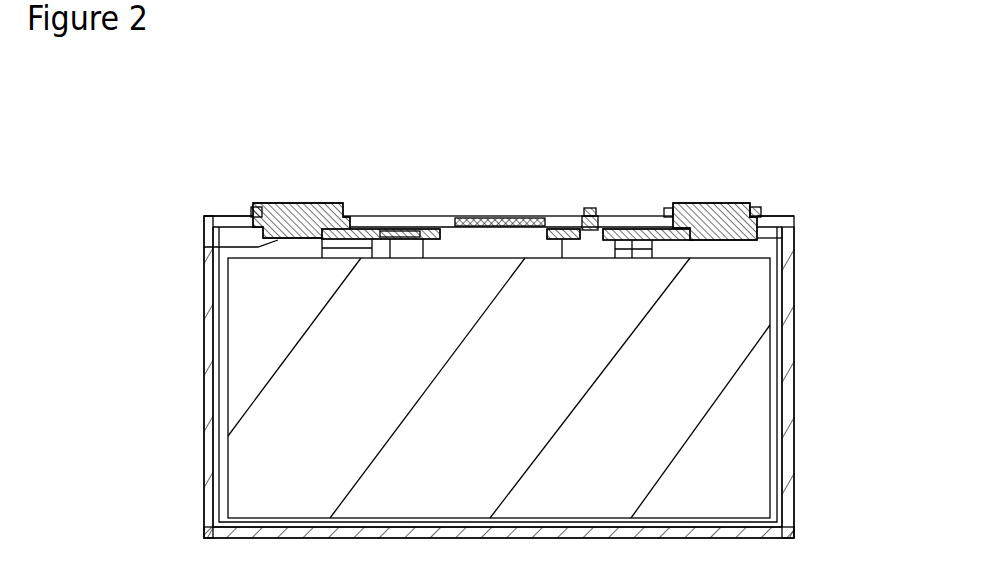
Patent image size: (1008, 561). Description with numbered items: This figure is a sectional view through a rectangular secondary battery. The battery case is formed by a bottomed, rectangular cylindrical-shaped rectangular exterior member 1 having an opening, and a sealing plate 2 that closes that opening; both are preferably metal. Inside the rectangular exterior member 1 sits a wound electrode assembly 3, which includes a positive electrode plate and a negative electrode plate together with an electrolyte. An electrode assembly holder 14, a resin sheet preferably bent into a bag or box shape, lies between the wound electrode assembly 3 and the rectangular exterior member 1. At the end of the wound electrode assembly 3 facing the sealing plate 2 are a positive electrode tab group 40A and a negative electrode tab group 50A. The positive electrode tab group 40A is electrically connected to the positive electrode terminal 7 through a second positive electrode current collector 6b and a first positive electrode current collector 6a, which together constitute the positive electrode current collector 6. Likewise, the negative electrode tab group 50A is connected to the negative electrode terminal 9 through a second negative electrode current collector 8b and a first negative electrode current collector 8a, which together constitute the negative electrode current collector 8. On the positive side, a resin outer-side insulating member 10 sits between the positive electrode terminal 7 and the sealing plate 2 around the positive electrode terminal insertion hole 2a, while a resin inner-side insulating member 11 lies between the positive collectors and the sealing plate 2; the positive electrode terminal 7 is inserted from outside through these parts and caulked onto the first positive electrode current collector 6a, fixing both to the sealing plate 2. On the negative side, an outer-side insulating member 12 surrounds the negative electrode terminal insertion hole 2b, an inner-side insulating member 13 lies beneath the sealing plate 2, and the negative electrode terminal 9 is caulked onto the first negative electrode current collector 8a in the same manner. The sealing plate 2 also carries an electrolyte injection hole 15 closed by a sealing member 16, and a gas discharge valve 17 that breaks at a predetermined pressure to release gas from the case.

The rectangular exterior member 1 is at (790, 395).
The sealing plate 2 is at (438, 220).
The positive electrode terminal insertion hole 2a is at (752, 222).
The negative electrode terminal insertion hole 2b is at (250, 214).
The wound electrode assembly 3 is at (243, 475).
The positive electrode current collector 6 is at (632, 262).
The first positive electrode current collector 6a is at (760, 238).
The second positive electrode current collector 6b is at (634, 258).
The positive electrode terminal 7 is at (705, 202).
The negative electrode current collector 8 is at (327, 250).
The first negative electrode current collector 8a is at (203, 247).
The second negative electrode current collector 8b is at (372, 248).
The negative electrode terminal 9 is at (298, 201).
The outer-side insulating member 10 is at (757, 208).
The inner-side insulating member 11 is at (610, 229).
The outer-side insulating member 12 is at (260, 206).
The inner-side insulating member 13 is at (418, 229).
The electrode assembly holder 14 is at (785, 437).
The electrolyte injection hole 15 is at (572, 228).
The sealing member 16 is at (592, 208).
The gas discharge valve 17 is at (505, 222).
The positive electrode tab group 40A is at (560, 235).
The negative electrode tab group 50A is at (400, 230).